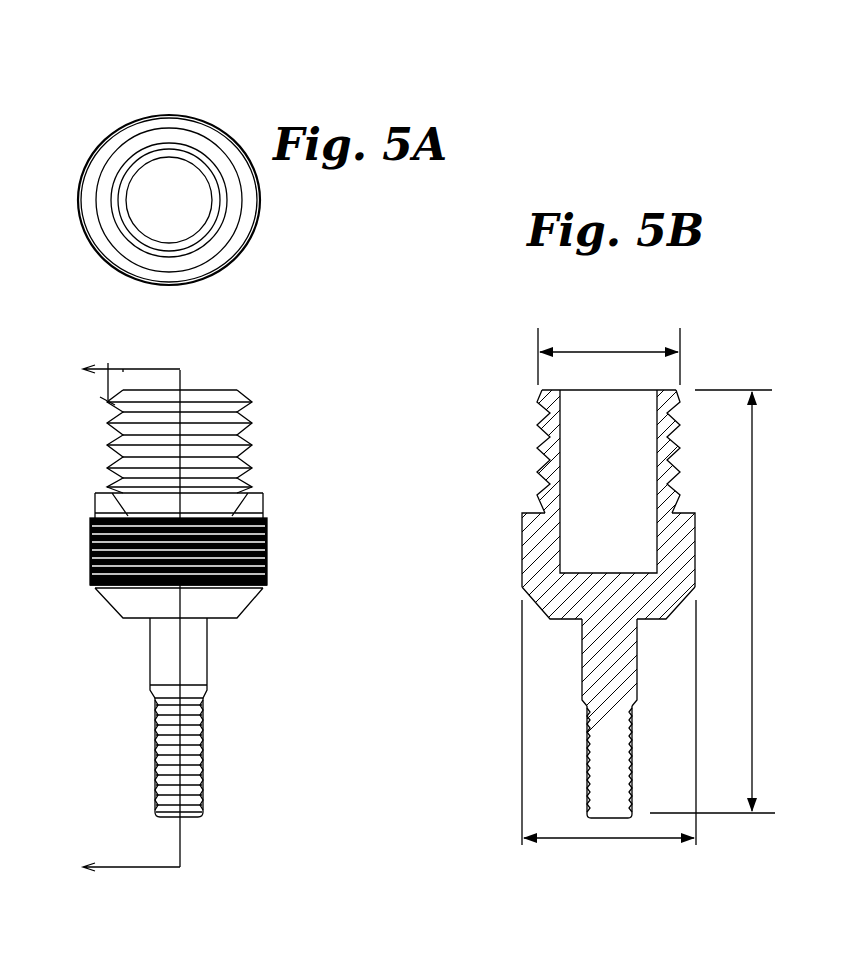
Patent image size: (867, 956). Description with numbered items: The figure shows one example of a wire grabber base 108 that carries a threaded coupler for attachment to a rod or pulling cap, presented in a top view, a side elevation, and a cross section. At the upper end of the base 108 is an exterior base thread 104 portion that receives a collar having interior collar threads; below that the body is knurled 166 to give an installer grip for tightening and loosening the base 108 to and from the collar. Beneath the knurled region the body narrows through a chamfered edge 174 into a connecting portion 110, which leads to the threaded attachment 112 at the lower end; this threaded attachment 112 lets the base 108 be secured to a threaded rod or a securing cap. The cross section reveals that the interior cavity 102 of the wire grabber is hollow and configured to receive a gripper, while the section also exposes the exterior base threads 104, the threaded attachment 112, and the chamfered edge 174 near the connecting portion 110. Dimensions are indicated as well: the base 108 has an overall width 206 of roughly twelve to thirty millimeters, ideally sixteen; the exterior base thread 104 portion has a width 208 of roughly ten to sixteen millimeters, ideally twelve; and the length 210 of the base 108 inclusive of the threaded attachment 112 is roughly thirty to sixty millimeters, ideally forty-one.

In FIG. 5B, the interior cavity 102 is at (648, 436).
In FIG. 5A, the exterior base thread 104 is at (237, 438).
In FIG. 5B, the exterior base thread 104 is at (547, 467).
In FIG. 5A, the wire grabber base 108 is at (172, 98).
In FIG. 5B, the wire grabber base 108 is at (463, 545).
In FIG. 5A, the connecting portion 110 is at (193, 672).
In FIG. 5B, the connecting portion 110 is at (597, 648).
In FIG. 5A, the threaded attachment 112 is at (188, 755).
In FIG. 5B, the threaded attachment 112 is at (600, 752).
In FIG. 5A, the knurled surface 166 is at (270, 542).
In FIG. 5B, the knurled surface 166 is at (520, 572).
In FIG. 5A, the chamfered edge 174 is at (262, 595).
In FIG. 5B, the chamfered edge 174 is at (532, 597).
In FIG. 5B, the width of the base 206 is at (555, 842).
In FIG. 5B, the width of the exterior base thread portion 208 is at (622, 348).
In FIG. 5B, the length of the base 210 is at (752, 577).